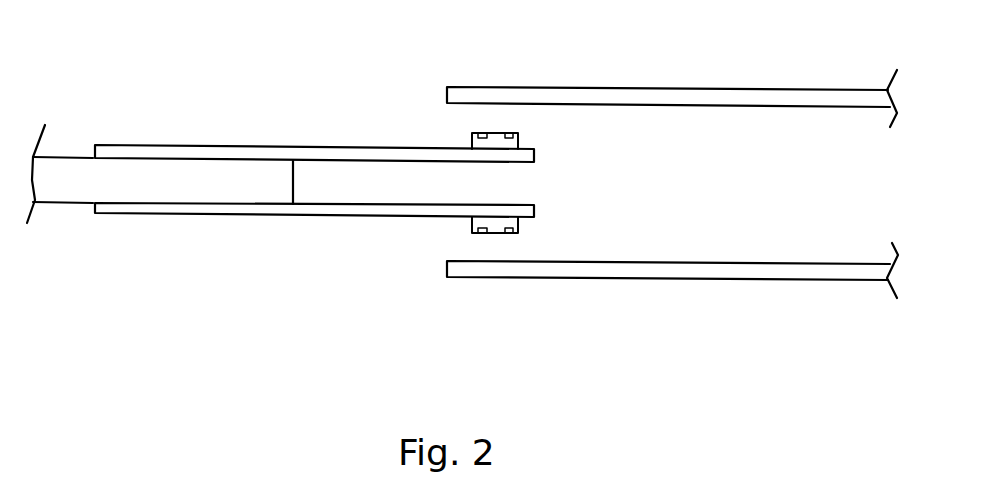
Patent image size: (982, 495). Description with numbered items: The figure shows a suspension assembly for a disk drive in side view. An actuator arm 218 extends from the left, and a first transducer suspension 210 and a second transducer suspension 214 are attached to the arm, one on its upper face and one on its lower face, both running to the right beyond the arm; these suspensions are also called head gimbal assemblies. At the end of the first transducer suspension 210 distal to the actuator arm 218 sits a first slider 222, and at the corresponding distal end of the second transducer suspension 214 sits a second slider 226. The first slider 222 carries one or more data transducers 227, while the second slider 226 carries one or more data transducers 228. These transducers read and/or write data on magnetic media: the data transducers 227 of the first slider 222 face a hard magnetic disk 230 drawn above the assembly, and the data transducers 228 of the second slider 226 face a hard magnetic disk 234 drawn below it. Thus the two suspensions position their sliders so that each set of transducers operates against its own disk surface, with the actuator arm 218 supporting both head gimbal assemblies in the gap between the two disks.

The first transducer suspension 210 is at (152, 146).
The second transducer suspension 214 is at (153, 214).
The actuator arm 218 is at (62, 168).
The first slider 222 is at (518, 145).
The second slider 226 is at (518, 228).
The data transducers 227 is at (473, 133).
The data transducers 228 is at (473, 233).
The hard magnetic disk 230 is at (697, 87).
The hard magnetic disk 234 is at (695, 283).